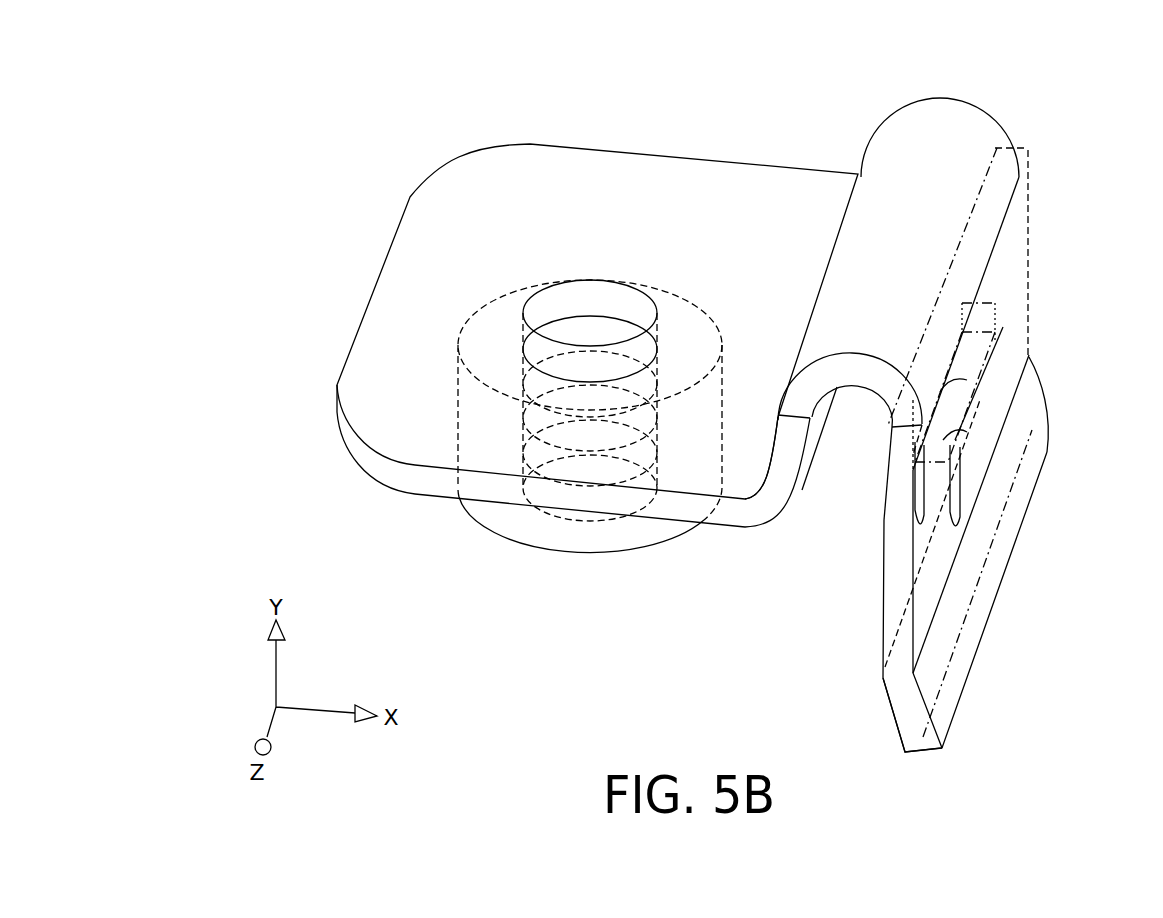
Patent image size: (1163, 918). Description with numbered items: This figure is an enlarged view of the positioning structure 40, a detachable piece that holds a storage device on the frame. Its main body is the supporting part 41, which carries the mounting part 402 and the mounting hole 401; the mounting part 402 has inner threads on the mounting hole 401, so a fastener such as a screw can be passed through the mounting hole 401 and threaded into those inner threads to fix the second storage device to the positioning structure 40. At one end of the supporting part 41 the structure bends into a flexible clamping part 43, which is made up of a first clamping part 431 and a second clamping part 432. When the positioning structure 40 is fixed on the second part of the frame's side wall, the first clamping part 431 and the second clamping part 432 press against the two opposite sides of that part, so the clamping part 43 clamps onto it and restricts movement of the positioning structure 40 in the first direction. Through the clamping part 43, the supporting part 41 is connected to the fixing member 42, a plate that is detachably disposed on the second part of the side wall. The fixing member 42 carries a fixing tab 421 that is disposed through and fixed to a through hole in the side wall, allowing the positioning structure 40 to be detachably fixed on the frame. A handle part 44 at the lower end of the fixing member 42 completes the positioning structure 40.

The positioning structure 40 is at (747, 402).
The supporting part 41 is at (420, 290).
The mounting hole 401 is at (607, 303).
The mounting part 402 is at (503, 527).
The clamping part 43 is at (882, 311).
The first clamping part 431 is at (787, 467).
The second clamping part 432 is at (897, 512).
The fixing member 42 is at (909, 450).
The fixing tab 421 is at (903, 477).
The handle part 44 is at (880, 711).